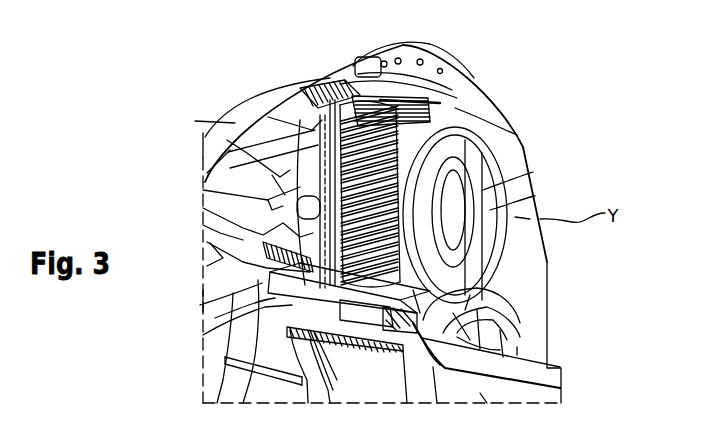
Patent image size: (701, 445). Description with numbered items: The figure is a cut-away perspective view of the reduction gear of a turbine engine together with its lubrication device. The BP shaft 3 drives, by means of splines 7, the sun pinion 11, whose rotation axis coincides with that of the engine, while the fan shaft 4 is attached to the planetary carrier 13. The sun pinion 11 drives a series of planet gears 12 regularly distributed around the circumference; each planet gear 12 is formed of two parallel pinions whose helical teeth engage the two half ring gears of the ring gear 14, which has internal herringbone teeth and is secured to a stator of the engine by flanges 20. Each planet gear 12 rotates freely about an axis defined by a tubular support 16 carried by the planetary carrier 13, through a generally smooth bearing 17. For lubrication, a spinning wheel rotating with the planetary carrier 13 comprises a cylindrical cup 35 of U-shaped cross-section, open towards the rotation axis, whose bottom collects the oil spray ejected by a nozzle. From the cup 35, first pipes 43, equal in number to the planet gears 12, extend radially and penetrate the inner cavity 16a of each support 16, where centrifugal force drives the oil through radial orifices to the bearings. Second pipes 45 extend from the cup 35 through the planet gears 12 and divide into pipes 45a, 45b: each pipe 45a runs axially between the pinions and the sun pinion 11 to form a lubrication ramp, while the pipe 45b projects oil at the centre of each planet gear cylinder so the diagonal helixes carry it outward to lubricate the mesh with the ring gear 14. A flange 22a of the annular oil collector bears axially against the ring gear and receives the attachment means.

The BP shaft 3 is at (497, 387).
The fan shaft 4 is at (237, 117).
The splines 7 is at (291, 385).
The sun pinion 11 is at (220, 330).
The planet gears 12 is at (303, 83).
The planetary carrier 13 is at (272, 137).
The ring gear 14 is at (462, 105).
The tubular support 16 is at (483, 152).
The inner cavity 16a is at (530, 167).
The bearing 17 is at (464, 127).
The flanges 20 is at (412, 53).
The flange of the annular oil collector 22a is at (463, 419).
The cup 35 is at (500, 350).
The first pipes 43 is at (497, 223).
The second pipes 45 is at (497, 273).
The pipe 45a is at (215, 304).
The pipe 45b is at (215, 123).